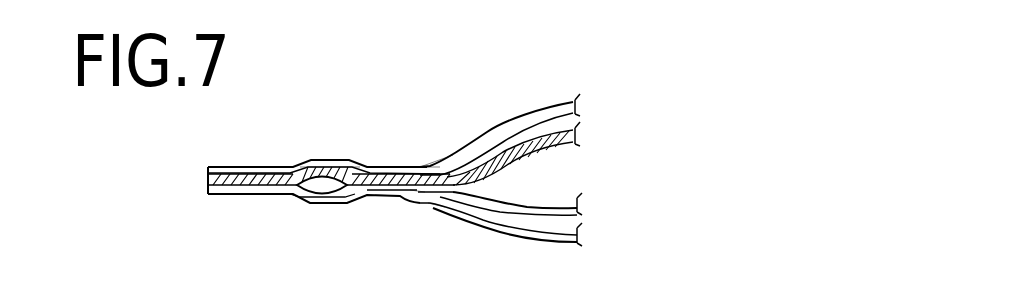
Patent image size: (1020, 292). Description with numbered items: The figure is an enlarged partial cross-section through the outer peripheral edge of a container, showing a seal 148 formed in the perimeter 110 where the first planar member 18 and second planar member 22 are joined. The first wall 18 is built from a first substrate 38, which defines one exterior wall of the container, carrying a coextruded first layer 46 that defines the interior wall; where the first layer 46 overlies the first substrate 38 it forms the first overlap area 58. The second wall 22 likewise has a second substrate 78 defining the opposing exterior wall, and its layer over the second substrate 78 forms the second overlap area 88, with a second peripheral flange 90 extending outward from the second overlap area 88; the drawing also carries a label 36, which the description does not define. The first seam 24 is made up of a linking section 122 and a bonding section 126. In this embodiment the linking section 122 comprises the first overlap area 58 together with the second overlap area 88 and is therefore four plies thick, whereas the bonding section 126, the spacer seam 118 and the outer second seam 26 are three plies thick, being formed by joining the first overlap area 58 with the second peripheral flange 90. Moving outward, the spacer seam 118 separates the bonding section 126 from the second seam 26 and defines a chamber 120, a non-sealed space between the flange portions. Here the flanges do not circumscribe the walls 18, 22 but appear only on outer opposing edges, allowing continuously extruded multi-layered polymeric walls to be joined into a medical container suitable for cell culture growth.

The first planar member 18 is at (561, 104).
The second planar member 22 is at (571, 123).
The first seam 24 is at (416, 164).
The second seam 26 is at (243, 168).
The lower outer layer 36 is at (577, 208).
The first substrate 38 is at (574, 105).
The first layer 46 is at (546, 141).
The first overlap area 58 is at (424, 168).
The second substrate 78 is at (578, 238).
The second overlap area 88 is at (418, 195).
The second peripheral flange 90 is at (364, 199).
The perimeter 110 is at (429, 86).
The spacer seam 118 is at (340, 155).
The chamber 120 is at (317, 182).
The linking section 122 is at (436, 212).
The bonding section 126 is at (386, 191).
The seal 148 is at (334, 107).